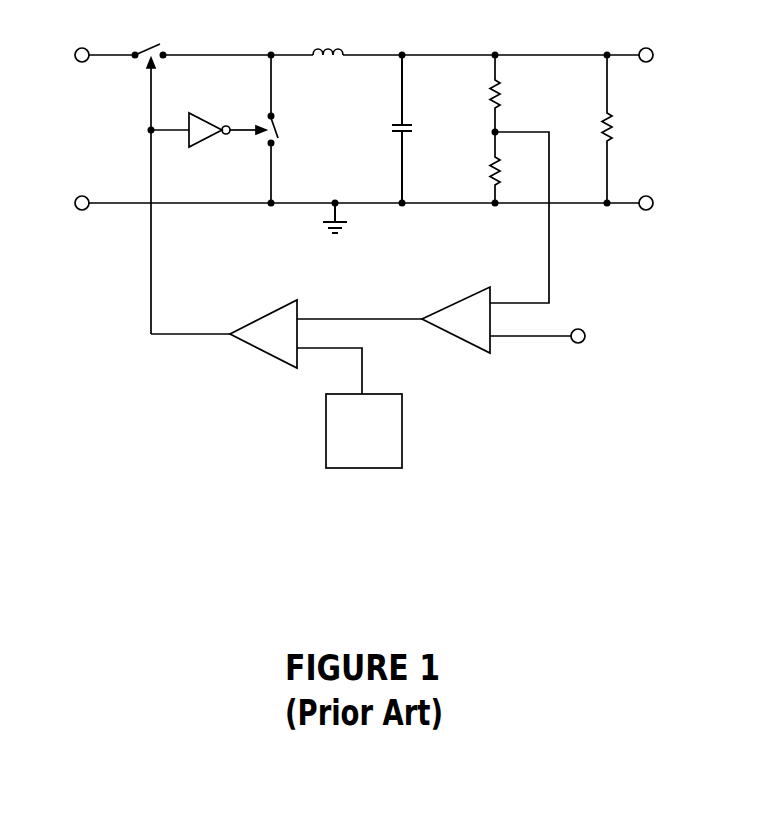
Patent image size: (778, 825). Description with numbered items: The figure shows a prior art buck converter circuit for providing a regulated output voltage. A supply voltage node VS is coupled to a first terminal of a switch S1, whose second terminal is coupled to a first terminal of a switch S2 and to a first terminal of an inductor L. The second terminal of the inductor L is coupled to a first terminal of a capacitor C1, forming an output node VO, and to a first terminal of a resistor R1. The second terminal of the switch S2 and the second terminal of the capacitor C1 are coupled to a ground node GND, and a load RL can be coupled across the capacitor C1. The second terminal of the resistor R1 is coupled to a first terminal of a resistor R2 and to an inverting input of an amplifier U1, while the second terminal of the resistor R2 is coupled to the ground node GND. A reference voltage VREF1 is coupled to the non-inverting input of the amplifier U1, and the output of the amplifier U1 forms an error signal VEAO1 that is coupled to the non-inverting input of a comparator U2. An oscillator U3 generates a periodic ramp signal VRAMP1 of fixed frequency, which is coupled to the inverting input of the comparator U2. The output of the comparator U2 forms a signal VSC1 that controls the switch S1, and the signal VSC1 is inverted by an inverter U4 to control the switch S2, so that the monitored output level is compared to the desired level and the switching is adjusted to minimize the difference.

The switch S1 is at (149, 41).
The switch S2 is at (292, 129).
The inverter U4 is at (227, 123).
The inductor L is at (328, 33).
The capacitor C1 is at (422, 129).
The resistor R1 is at (513, 93).
The resistor R2 is at (513, 167).
The load RL is at (591, 129).
The amplifier U1 is at (456, 307).
The comparator U2 is at (263, 322).
The oscillator U3 is at (385, 431).
The supply voltage node VS is at (63, 54).
The output node VO is at (666, 126).
The ground node GND is at (53, 203).
The reference voltage VREF1 is at (579, 335).
The error signal VEAO1 is at (359, 304).
The periodic ramp signal VRAMP1 is at (353, 358).
The signal VSC1 is at (190, 322).